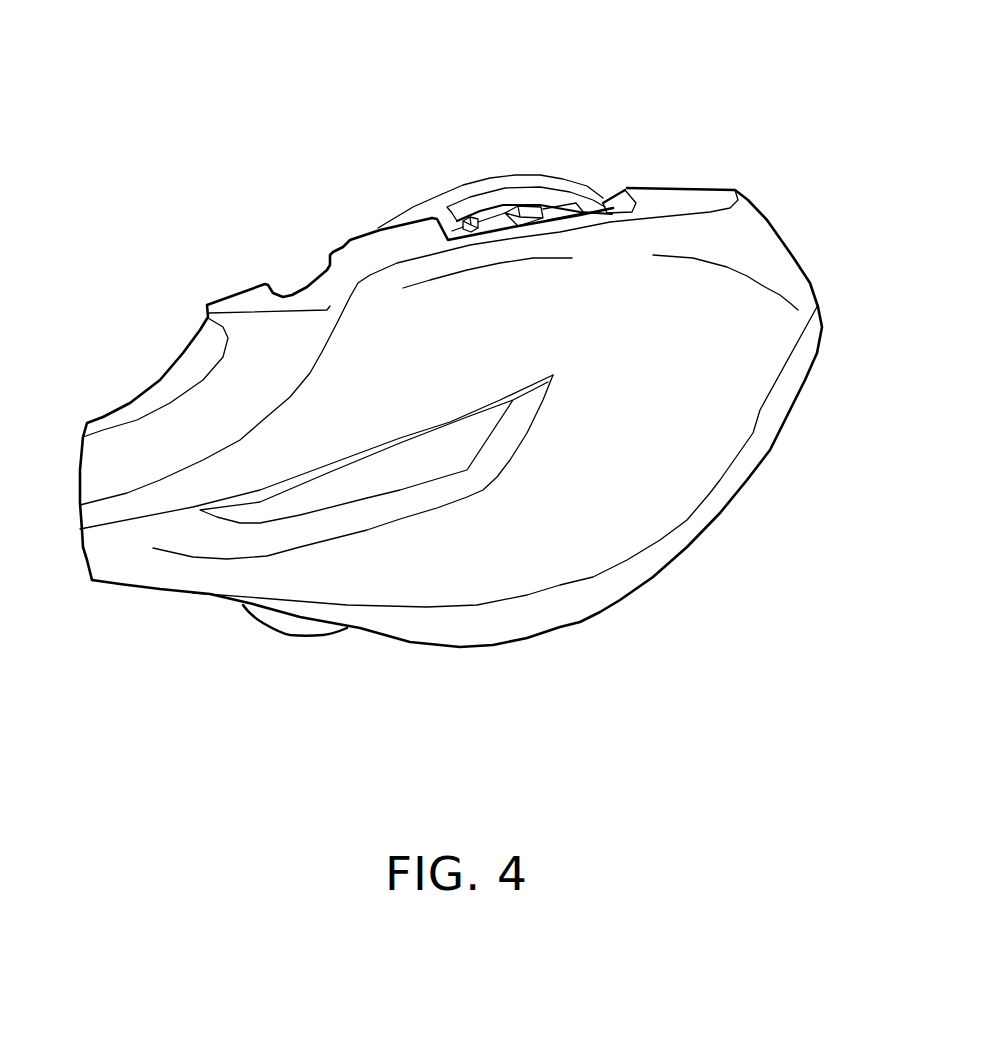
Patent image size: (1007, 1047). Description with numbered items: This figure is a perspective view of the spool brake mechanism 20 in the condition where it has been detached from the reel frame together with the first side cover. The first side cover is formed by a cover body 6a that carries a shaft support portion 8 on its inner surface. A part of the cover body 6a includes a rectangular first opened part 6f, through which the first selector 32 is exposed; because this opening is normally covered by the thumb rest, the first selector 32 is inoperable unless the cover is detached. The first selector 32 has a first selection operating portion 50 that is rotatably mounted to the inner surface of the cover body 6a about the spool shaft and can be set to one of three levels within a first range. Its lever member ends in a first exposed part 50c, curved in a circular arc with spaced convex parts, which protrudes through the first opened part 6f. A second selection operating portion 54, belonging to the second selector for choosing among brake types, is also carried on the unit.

The cover body 6a is at (630, 473).
The first opened part 6f is at (455, 223).
The shaft support portion 8 is at (495, 183).
The spool brake mechanism 20 is at (515, 123).
The first selector 32 is at (527, 195).
The first selection operating portion 50 is at (512, 198).
The first exposed part 50c is at (532, 215).
The second selection operating portion 54 is at (290, 635).